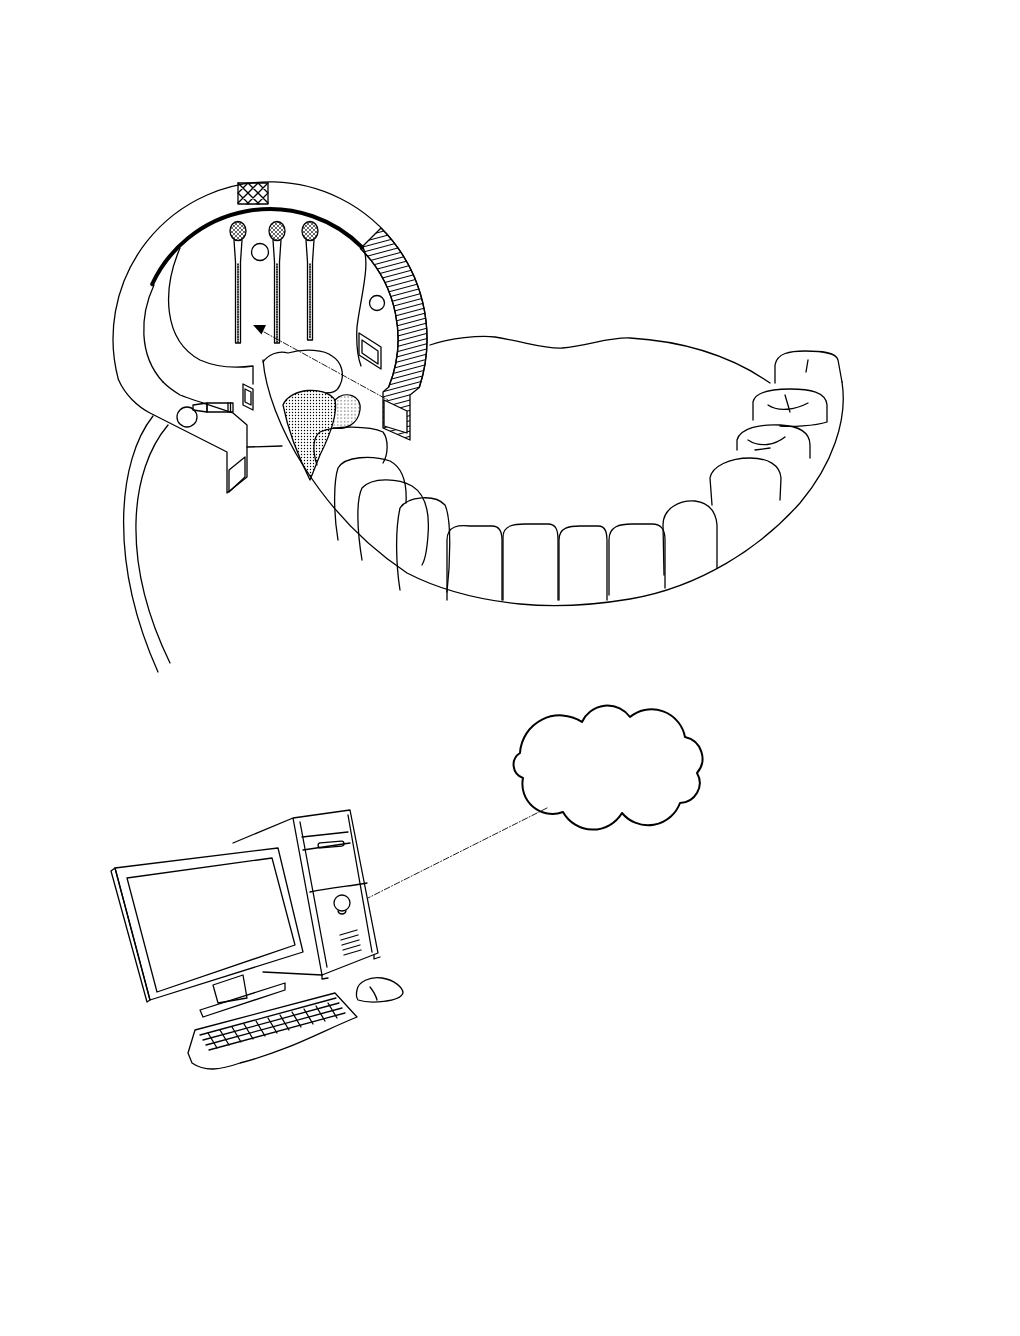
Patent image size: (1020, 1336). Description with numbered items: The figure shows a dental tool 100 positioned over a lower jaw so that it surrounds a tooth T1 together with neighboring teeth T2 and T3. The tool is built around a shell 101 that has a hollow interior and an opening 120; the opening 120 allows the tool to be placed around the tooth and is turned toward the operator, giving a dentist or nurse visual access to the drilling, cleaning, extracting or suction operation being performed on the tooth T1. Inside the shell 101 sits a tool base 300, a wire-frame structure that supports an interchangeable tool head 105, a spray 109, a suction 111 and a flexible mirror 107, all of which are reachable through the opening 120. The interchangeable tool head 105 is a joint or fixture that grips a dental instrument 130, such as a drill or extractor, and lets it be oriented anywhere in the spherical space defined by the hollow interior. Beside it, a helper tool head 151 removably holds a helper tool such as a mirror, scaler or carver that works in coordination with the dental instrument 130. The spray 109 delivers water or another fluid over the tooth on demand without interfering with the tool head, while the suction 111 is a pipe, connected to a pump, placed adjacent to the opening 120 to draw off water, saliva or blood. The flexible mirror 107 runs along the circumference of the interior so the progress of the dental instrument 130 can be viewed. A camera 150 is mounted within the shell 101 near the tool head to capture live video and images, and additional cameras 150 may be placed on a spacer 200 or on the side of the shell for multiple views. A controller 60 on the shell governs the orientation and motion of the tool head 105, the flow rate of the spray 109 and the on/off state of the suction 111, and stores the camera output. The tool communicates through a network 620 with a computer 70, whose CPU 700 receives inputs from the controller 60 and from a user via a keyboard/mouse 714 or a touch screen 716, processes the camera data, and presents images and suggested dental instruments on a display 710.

The dental tool 100 is at (194, 98).
The shell 101 is at (133, 315).
The tool base 300 is at (187, 235).
The spacer 200 is at (193, 265).
The controller 60 is at (250, 183).
The spray 109 is at (237, 253).
The helper tool head 151 is at (280, 247).
The interchangeable tool head 105 is at (318, 228).
The dental instrument 130 is at (315, 265).
The camera 150 is at (383, 297).
The flexible mirror 107 is at (400, 292).
The opening 120 is at (412, 390).
The suction 111 is at (125, 541).
The tooth T1 is at (321, 435).
The tooth T2 is at (364, 445).
The tooth T3 is at (284, 365).
The network 620 is at (608, 768).
The computer 70 is at (135, 806).
The CPU 700 is at (330, 823).
The display 710 is at (207, 932).
The touch screen 716 is at (211, 925).
The keyboard/mouse 714 is at (303, 1033).